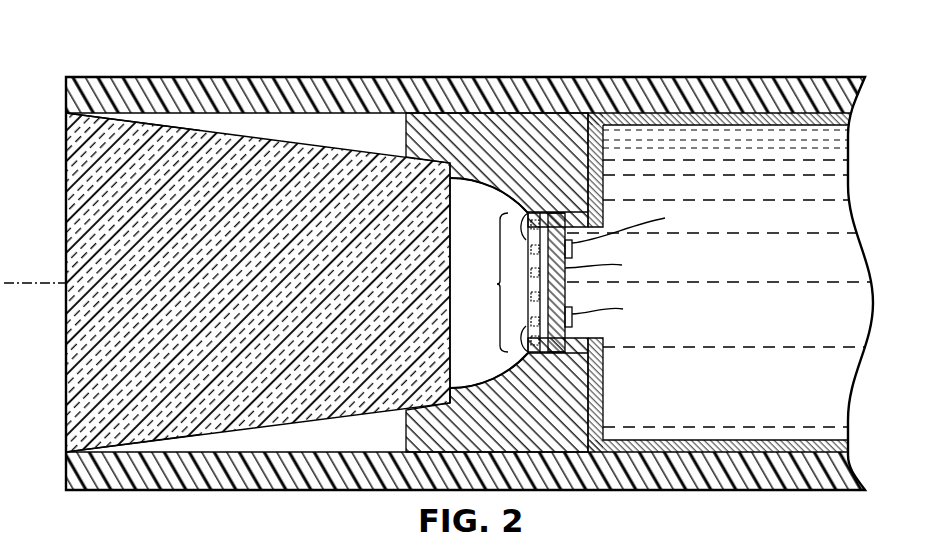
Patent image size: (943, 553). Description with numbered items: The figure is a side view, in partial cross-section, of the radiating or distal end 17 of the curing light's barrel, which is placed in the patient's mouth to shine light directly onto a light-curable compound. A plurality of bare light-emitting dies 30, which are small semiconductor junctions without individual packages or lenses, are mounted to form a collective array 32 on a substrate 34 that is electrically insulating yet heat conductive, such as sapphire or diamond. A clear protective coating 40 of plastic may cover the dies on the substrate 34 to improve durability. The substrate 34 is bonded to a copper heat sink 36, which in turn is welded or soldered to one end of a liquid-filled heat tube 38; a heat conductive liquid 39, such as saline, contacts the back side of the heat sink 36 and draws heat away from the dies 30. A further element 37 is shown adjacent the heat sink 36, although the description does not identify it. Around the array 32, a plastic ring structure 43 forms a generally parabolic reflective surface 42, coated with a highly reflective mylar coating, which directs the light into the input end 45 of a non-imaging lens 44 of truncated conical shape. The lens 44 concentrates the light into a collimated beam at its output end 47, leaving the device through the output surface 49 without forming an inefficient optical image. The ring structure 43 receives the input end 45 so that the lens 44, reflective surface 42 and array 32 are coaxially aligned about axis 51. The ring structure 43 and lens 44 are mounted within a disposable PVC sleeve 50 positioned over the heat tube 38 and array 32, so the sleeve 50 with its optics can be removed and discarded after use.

The radiating or distal end 17 is at (657, 36).
The light-emitting dies 30 is at (527, 211).
The array 32 is at (499, 285).
The substrate 34 is at (609, 311).
The heat sink 36 is at (609, 264).
The detector lead 37 is at (630, 230).
The heat tube 38 is at (775, 120).
The heat conductive liquid 39 is at (665, 152).
The clear protective coating 40 is at (522, 368).
The reflective surface 42 is at (457, 386).
The plastic ring structure 43 is at (452, 128).
The non-imaging lens 44 is at (238, 306).
The input end 45 is at (449, 312).
The output end 47 is at (70, 236).
The output surface 49 is at (69, 348).
The disposable sleeve 50 is at (553, 93).
The axis 51 is at (27, 281).